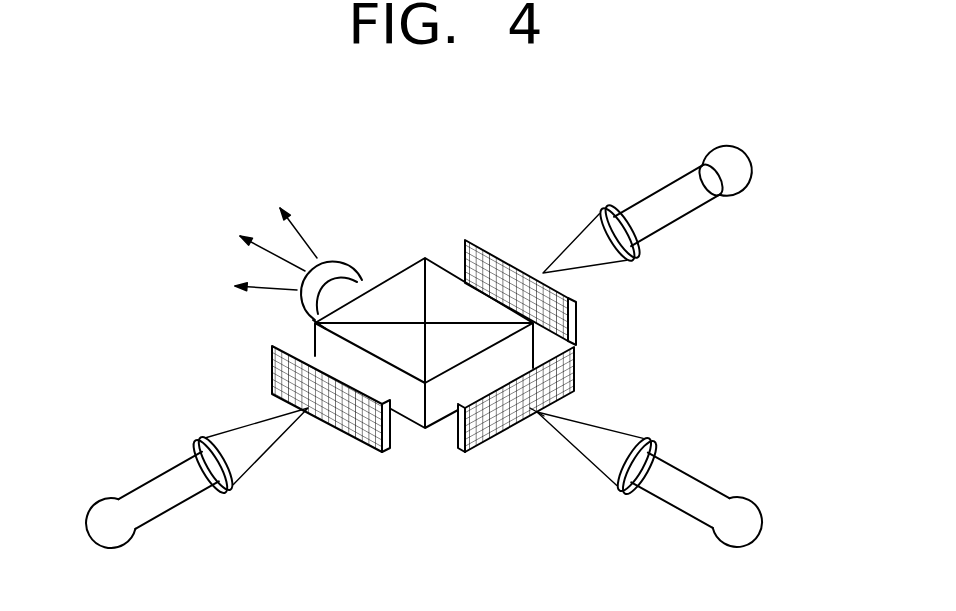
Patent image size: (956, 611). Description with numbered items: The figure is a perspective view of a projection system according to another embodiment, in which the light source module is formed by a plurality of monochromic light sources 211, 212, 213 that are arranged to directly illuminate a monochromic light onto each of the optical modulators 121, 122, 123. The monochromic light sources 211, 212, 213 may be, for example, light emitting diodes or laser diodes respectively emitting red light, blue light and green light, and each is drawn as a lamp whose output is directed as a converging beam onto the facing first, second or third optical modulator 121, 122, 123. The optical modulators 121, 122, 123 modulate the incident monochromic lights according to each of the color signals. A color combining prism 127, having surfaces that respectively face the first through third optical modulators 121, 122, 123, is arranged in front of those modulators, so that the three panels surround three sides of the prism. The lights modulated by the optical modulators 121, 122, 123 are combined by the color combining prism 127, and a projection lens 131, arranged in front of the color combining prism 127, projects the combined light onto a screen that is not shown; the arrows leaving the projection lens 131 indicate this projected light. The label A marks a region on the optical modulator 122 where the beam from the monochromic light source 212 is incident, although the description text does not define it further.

The first optical modulator 121 is at (268, 353).
The second optical modulator 122 is at (577, 374).
The third optical modulator 123 is at (482, 247).
The color combining prism 127 is at (412, 287).
The projection lens 131 is at (338, 258).
The monochromic light source 211 is at (100, 513).
The monochromic light source 212 is at (747, 518).
The monochromic light source 213 is at (733, 152).
The light incident region A is at (481, 437).